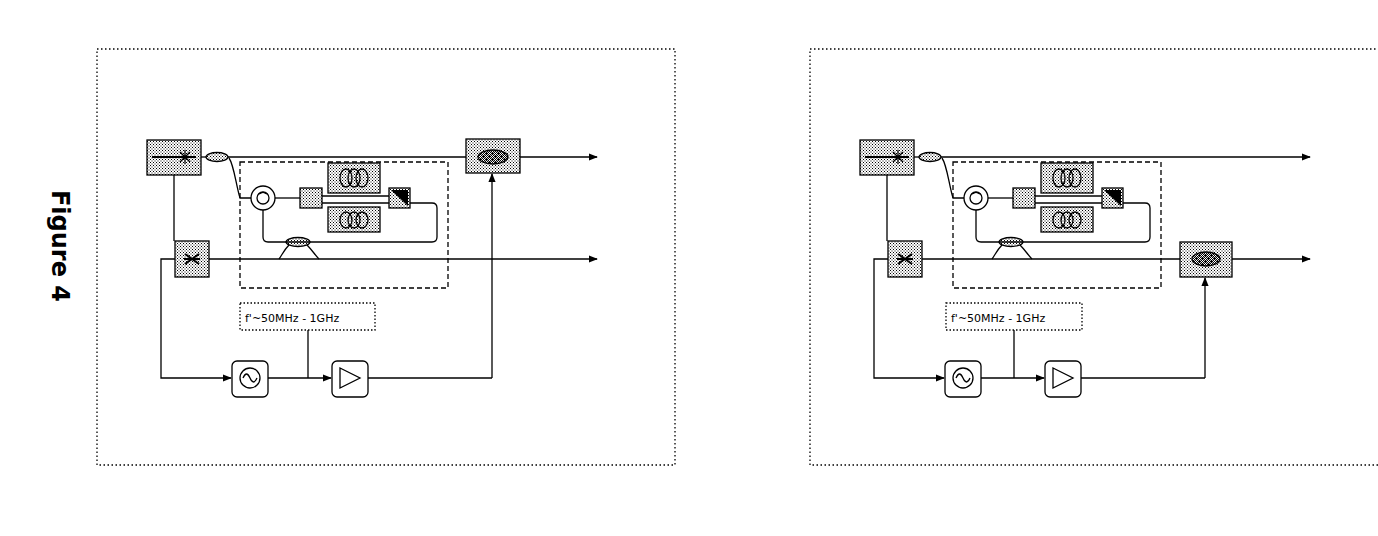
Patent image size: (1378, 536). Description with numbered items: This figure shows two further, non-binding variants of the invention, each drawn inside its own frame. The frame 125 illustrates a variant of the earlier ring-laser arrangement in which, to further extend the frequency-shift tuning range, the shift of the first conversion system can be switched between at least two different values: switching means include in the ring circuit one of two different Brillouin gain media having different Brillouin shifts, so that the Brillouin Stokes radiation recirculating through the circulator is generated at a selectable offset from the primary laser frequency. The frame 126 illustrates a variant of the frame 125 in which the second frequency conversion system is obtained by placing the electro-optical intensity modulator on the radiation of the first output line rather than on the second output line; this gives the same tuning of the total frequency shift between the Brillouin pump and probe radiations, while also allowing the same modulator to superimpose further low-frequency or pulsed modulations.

The frame 125 is at (590, 49).
The frame 126 is at (1094, 248).